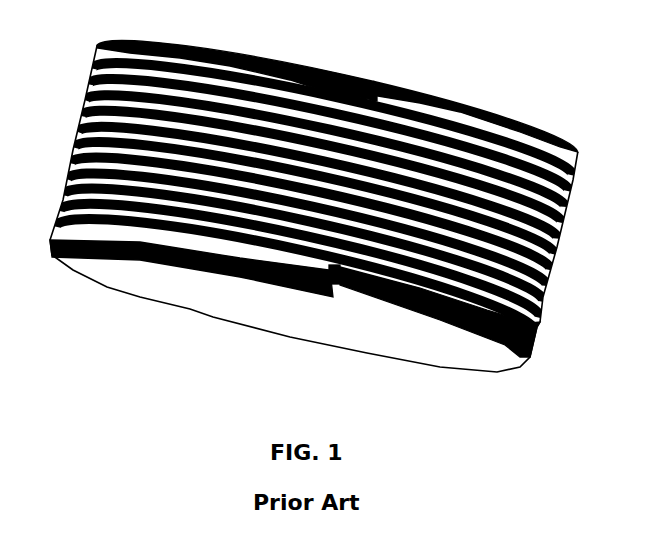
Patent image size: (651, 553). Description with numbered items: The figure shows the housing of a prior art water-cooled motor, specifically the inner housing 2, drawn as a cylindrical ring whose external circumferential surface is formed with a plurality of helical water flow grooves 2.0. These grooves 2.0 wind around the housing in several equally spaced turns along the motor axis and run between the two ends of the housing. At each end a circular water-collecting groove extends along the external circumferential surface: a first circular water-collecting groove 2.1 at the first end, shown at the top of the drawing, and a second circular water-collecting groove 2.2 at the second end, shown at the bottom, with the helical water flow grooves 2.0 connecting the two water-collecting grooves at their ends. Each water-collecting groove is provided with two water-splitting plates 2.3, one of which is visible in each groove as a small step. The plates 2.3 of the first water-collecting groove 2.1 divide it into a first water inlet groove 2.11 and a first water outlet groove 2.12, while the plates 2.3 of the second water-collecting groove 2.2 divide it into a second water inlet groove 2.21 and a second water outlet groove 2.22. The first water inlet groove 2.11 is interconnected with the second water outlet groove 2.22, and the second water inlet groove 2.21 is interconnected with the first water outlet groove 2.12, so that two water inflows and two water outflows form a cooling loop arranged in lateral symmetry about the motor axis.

The inner housing 2 is at (257, 280).
The helical water flow grooves 2.0 is at (97, 128).
The first circular water-collecting groove 2.1 is at (337, 91).
The first water inlet groove 2.11 is at (283, 70).
The first water outlet groove 2.12 is at (450, 116).
The second circular water-collecting groove 2.2 is at (290, 313).
The second water inlet groove 2.21 is at (165, 247).
The second water outlet groove 2.22 is at (427, 296).
The water-splitting plates 2.3 is at (374, 96).